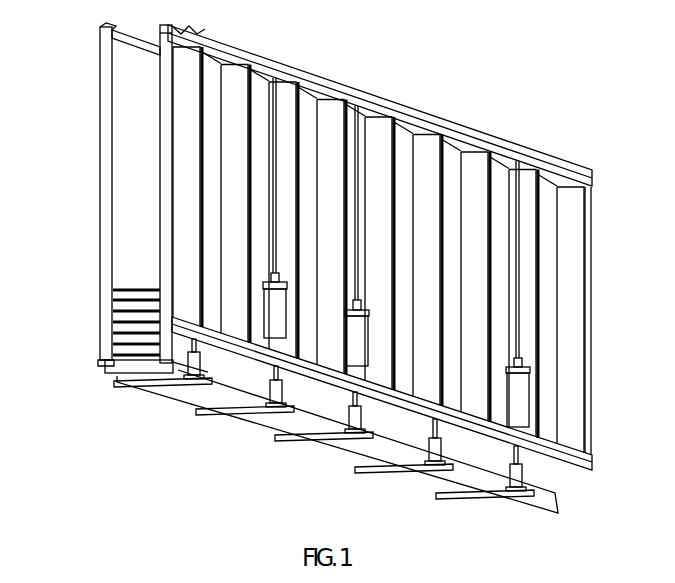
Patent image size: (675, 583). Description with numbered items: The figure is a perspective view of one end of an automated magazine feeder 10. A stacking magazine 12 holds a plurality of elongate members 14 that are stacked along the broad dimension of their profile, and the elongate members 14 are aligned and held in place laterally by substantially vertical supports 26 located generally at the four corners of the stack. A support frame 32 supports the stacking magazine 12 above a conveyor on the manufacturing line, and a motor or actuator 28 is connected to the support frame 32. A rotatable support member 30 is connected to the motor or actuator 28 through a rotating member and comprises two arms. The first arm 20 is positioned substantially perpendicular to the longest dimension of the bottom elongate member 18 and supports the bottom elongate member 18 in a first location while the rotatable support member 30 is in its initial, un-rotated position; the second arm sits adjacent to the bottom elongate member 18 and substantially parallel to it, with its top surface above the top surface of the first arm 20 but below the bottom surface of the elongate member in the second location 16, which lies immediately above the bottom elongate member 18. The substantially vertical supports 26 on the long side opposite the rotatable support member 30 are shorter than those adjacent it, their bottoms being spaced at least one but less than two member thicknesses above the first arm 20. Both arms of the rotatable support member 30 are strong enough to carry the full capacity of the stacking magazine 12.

The automated magazine feeder 10 is at (527, 86).
The stacking magazine 12 is at (137, 80).
The elongate members 14 is at (137, 287).
The elongate member in the second location 16 is at (127, 358).
The bottom elongate member 18 is at (106, 371).
The first arm 20 is at (116, 384).
The substantially vertical supports 26 is at (107, 46).
The motor or actuator 28 is at (525, 402).
The rotatable support member 30 is at (268, 414).
The support frame 32 is at (213, 45).